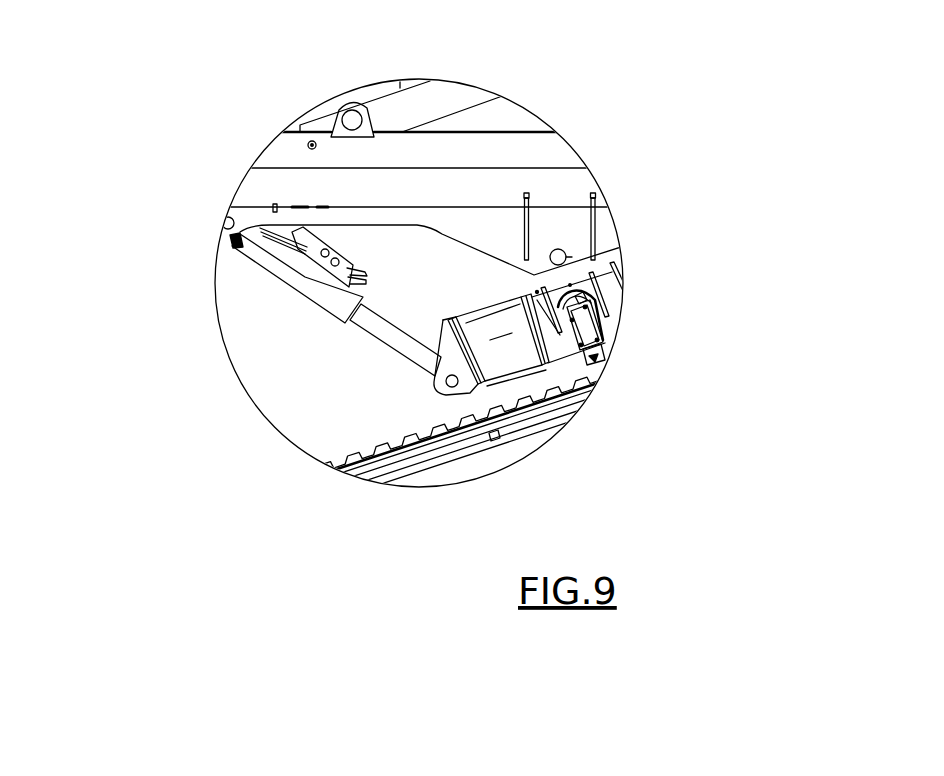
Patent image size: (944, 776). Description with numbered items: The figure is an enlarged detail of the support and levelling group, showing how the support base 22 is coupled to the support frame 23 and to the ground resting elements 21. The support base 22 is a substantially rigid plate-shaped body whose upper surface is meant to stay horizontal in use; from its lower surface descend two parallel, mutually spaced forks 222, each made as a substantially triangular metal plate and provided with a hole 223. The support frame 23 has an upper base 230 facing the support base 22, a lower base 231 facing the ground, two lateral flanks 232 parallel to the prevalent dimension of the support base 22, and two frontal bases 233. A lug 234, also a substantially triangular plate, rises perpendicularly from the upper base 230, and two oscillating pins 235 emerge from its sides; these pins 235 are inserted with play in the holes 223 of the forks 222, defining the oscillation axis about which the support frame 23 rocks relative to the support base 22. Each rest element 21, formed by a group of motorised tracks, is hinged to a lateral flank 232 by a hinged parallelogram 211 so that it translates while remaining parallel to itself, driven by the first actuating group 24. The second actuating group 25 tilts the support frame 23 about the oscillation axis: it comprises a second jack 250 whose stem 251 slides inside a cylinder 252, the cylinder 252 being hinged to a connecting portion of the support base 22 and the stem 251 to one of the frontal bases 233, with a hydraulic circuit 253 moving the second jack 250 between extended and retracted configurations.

The ground resting element 21 is at (455, 410).
The hinged parallelogram 211 is at (508, 378).
The support base 22 is at (292, 148).
The fork 222 is at (569, 228).
The hole 223 is at (566, 253).
The support frame 23 is at (622, 292).
The upper base 230 is at (537, 292).
The lower base 231 is at (600, 361).
The lateral flank 232 is at (627, 300).
The frontal base 233 is at (460, 368).
The lug 234 is at (509, 282).
The oscillating pin 235 is at (568, 258).
The first actuating group 24 is at (611, 334).
The second actuating group 25 is at (237, 255).
The second jack 250 is at (303, 282).
The stem 251 is at (376, 341).
The cylinder 252 is at (275, 267).
The hydraulic circuit 253 is at (302, 228).